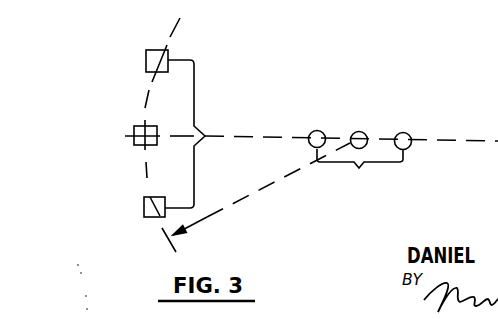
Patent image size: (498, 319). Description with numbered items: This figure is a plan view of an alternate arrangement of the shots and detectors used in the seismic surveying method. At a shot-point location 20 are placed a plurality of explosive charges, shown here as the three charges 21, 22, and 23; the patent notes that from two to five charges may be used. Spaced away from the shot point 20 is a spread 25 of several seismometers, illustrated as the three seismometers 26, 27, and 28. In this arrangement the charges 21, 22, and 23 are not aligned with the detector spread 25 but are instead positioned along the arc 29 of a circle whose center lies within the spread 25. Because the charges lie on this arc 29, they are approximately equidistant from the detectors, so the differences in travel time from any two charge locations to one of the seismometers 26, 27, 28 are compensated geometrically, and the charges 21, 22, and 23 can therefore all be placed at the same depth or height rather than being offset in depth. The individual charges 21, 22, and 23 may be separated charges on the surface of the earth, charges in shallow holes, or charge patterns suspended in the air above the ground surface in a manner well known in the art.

The shot-point location 20 is at (200, 134).
The explosive charge 21 is at (146, 59).
The explosive charge 22 is at (134, 132).
The explosive charge 23 is at (144, 209).
The spread 25 is at (360, 173).
The seismometer 26 is at (322, 133).
The seismometer 27 is at (365, 133).
The seismometer 28 is at (410, 134).
The arc 29 is at (147, 177).